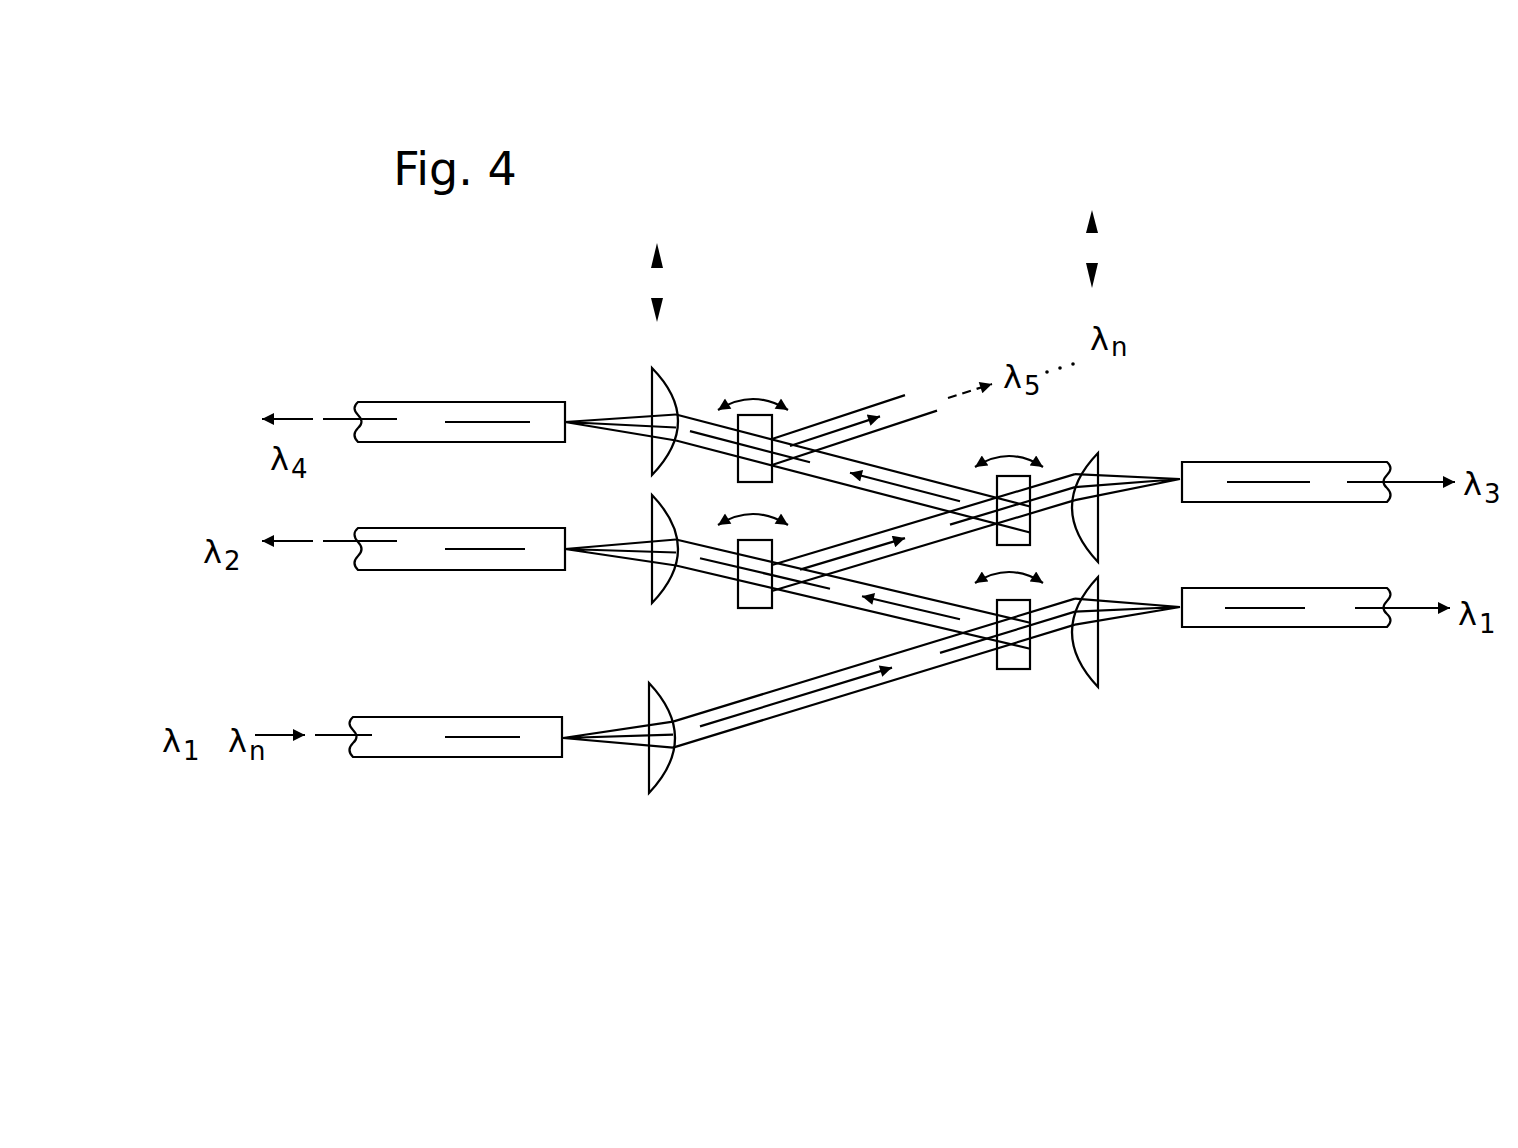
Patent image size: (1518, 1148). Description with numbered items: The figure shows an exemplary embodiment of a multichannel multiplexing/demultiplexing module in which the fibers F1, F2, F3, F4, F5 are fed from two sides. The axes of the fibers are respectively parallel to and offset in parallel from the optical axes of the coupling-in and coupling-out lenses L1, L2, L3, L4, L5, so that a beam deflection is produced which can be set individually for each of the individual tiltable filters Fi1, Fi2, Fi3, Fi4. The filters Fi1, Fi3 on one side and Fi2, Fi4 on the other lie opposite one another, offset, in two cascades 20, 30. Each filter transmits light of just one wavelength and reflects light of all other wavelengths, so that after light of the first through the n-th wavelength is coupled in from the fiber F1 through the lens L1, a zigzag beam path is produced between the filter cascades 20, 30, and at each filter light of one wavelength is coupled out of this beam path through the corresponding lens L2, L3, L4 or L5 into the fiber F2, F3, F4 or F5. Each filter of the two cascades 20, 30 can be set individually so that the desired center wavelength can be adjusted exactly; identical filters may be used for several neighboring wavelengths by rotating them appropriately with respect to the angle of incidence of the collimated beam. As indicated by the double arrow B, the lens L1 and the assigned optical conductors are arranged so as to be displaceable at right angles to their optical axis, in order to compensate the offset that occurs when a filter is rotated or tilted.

The filter cascade 20 is at (1010, 758).
The filter cascade 30 is at (724, 770).
The fiber F1 is at (456, 758).
The fiber F2 is at (1286, 626).
The fiber F3 is at (460, 569).
The fiber F4 is at (1286, 460).
The fiber F5 is at (460, 442).
The coupling-in lens L1 is at (631, 743).
The coupling-out lens L2 is at (1115, 632).
The coupling-out lens L3 is at (635, 557).
The coupling-out lens L4 is at (1113, 507).
The coupling-out lens L5 is at (637, 430).
The tiltable filter Fi1 is at (1009, 642).
The tiltable filter Fi2 is at (753, 581).
The tiltable filter Fi3 is at (1012, 480).
The tiltable filter Fi4 is at (755, 422).
The double arrow B is at (887, 266).